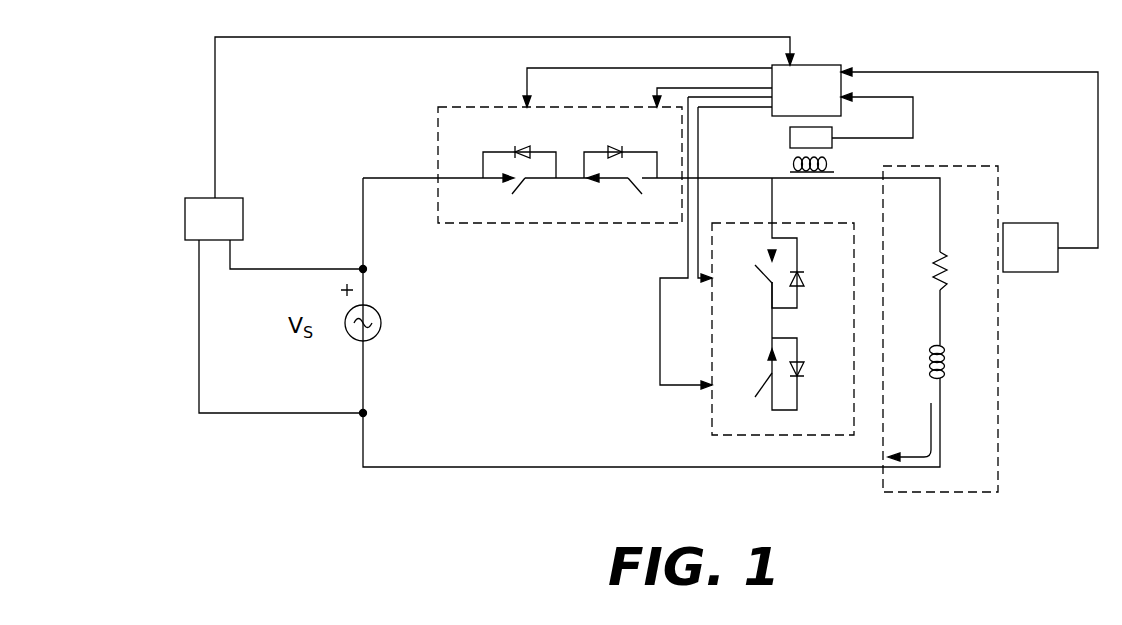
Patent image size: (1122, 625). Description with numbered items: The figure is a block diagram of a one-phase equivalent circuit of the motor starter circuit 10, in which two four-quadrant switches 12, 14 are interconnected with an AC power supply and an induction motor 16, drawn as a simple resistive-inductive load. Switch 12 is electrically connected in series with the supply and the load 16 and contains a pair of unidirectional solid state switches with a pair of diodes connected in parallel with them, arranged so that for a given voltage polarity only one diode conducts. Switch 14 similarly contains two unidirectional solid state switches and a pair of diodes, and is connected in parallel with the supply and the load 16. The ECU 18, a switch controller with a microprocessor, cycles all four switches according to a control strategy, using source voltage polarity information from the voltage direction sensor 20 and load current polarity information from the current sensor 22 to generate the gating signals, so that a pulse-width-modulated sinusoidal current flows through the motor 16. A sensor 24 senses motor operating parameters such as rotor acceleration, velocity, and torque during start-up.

The motor starter circuit 10 is at (445, 467).
The four-quadrant switch 12 is at (558, 107).
The four-quadrant switch 14 is at (713, 333).
The induction motor 16 is at (953, 166).
The ECU 18 is at (815, 65).
The voltage direction sensor 20 is at (185, 220).
The current sensor 22 is at (792, 165).
The sensor 24 is at (1050, 272).